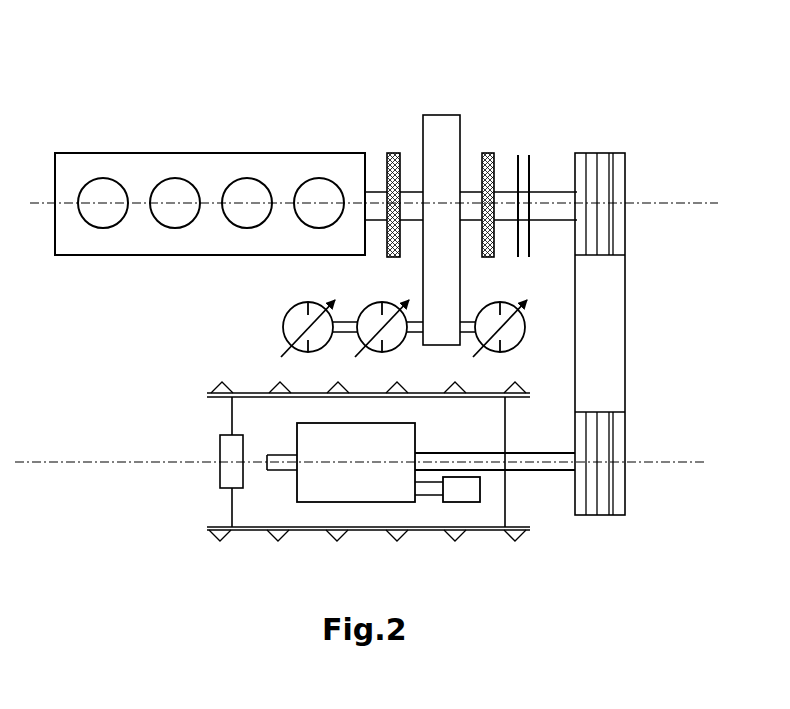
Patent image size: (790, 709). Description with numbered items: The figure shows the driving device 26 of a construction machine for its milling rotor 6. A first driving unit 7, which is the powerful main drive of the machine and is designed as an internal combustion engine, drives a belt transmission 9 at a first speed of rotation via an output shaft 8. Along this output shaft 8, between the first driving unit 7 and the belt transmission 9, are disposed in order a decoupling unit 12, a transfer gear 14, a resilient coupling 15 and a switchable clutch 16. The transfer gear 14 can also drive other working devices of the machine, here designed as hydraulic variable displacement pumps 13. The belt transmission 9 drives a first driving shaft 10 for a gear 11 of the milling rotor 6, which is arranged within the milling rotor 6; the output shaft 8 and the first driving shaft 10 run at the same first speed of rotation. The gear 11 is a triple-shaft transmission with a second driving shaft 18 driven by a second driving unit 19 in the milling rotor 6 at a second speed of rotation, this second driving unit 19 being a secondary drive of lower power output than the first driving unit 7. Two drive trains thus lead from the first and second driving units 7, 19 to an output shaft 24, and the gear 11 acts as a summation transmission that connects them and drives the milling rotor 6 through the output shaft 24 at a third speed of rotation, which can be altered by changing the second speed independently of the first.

The driving device 26 is at (118, 92).
The first driving unit 7 is at (222, 160).
The output shaft 8 is at (371, 190).
The decoupling unit 12 is at (392, 153).
The transfer gear 14 is at (447, 160).
The resilient coupling 15 is at (487, 153).
The switchable clutch 16 is at (523, 160).
The belt transmission 9 is at (617, 332).
The hydraulic variable displacement pumps 13 is at (493, 355).
The milling rotor 6 is at (232, 417).
The output shaft 24 is at (280, 463).
The gear 11 is at (340, 467).
The second driving shaft 18 is at (432, 488).
The second driving unit 19 is at (465, 490).
The first driving shaft 10 is at (542, 465).